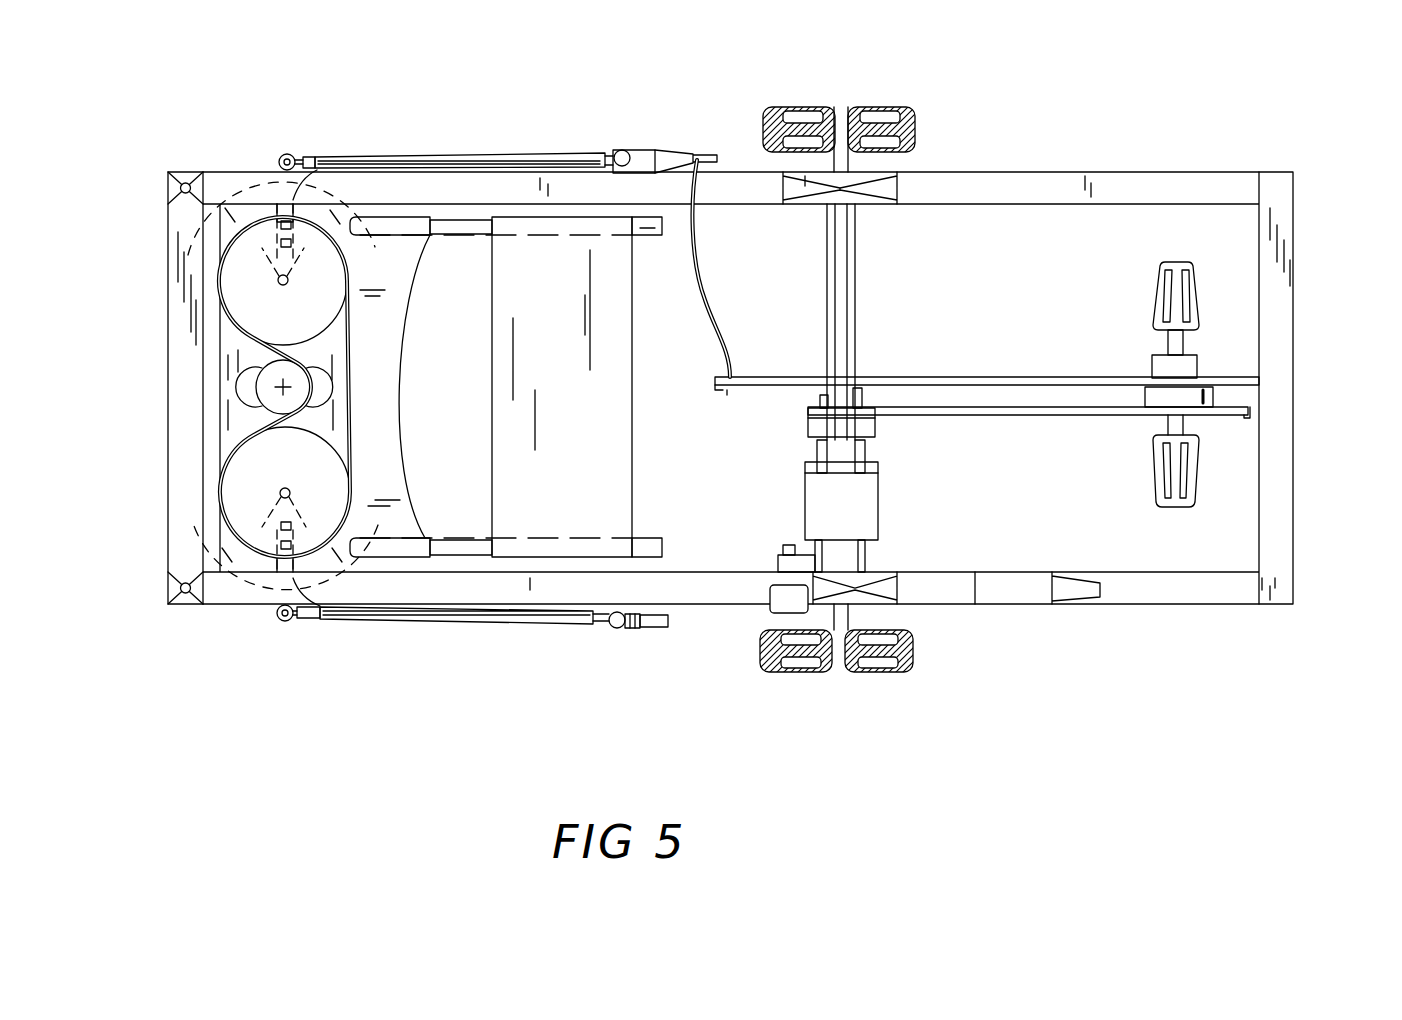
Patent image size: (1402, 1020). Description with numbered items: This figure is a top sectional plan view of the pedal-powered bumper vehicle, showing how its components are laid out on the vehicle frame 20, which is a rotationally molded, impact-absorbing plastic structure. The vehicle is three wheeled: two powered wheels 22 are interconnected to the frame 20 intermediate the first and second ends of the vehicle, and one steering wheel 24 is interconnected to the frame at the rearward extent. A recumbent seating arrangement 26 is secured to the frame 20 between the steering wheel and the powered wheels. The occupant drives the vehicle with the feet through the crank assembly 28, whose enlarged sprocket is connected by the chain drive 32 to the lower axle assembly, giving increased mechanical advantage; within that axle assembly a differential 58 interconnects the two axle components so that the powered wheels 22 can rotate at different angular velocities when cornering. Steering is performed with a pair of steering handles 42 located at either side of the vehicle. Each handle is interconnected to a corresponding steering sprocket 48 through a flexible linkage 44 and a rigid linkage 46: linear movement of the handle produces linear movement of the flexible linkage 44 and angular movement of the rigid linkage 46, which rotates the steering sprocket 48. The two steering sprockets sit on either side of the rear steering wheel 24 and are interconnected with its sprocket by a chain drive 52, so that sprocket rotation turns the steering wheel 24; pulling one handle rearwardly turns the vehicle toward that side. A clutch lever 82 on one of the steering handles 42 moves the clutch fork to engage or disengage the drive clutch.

The vehicle frame 20 is at (1273, 306).
The powered wheels 22 is at (915, 125).
The steering wheel 24 is at (245, 395).
The recumbent seating arrangement 26 is at (585, 462).
The crank assembly 28 is at (1237, 413).
The chain drive 32 is at (1062, 400).
The steering handles 42 is at (618, 150).
The flexible linkage 44 is at (468, 156).
The rigid linkage 46 is at (309, 157).
The steering sprocket 48 is at (298, 328).
The chain drive 52 is at (250, 218).
The differential 58 is at (812, 520).
The clutch lever 82 is at (700, 152).